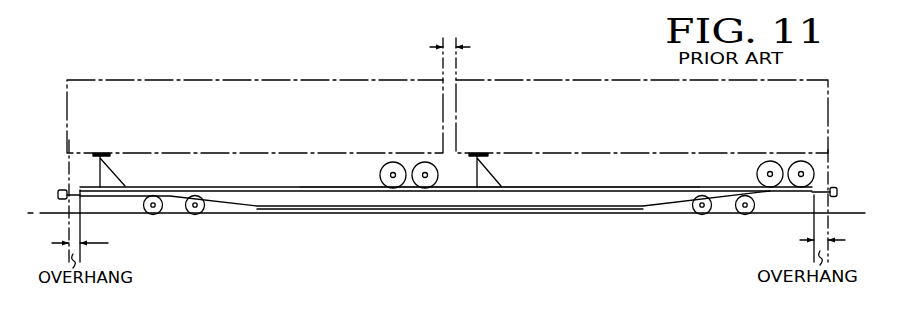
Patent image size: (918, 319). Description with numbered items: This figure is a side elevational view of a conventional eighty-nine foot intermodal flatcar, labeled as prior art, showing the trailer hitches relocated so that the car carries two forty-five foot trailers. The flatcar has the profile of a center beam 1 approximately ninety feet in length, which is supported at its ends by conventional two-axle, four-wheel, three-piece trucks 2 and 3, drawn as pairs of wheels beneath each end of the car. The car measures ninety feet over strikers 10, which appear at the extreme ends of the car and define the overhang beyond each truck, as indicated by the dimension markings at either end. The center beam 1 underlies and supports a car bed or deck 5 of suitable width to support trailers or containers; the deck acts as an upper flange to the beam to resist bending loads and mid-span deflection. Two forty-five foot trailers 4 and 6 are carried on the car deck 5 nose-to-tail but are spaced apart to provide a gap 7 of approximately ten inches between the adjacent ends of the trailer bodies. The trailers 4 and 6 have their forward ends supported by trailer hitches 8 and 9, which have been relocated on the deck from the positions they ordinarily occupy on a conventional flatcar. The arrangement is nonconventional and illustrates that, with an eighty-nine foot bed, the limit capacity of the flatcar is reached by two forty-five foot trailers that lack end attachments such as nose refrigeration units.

The center beam 1 is at (598, 199).
The truck 2 is at (713, 222).
The truck 3 is at (177, 211).
The 45 foot trailer 4 is at (247, 86).
The car deck 5 is at (618, 186).
The 45 foot trailer 6 is at (616, 84).
The gap 7 is at (449, 36).
The trailer hitch 8 is at (110, 180).
The trailer hitch 9 is at (489, 178).
The striker 10 is at (80, 190).